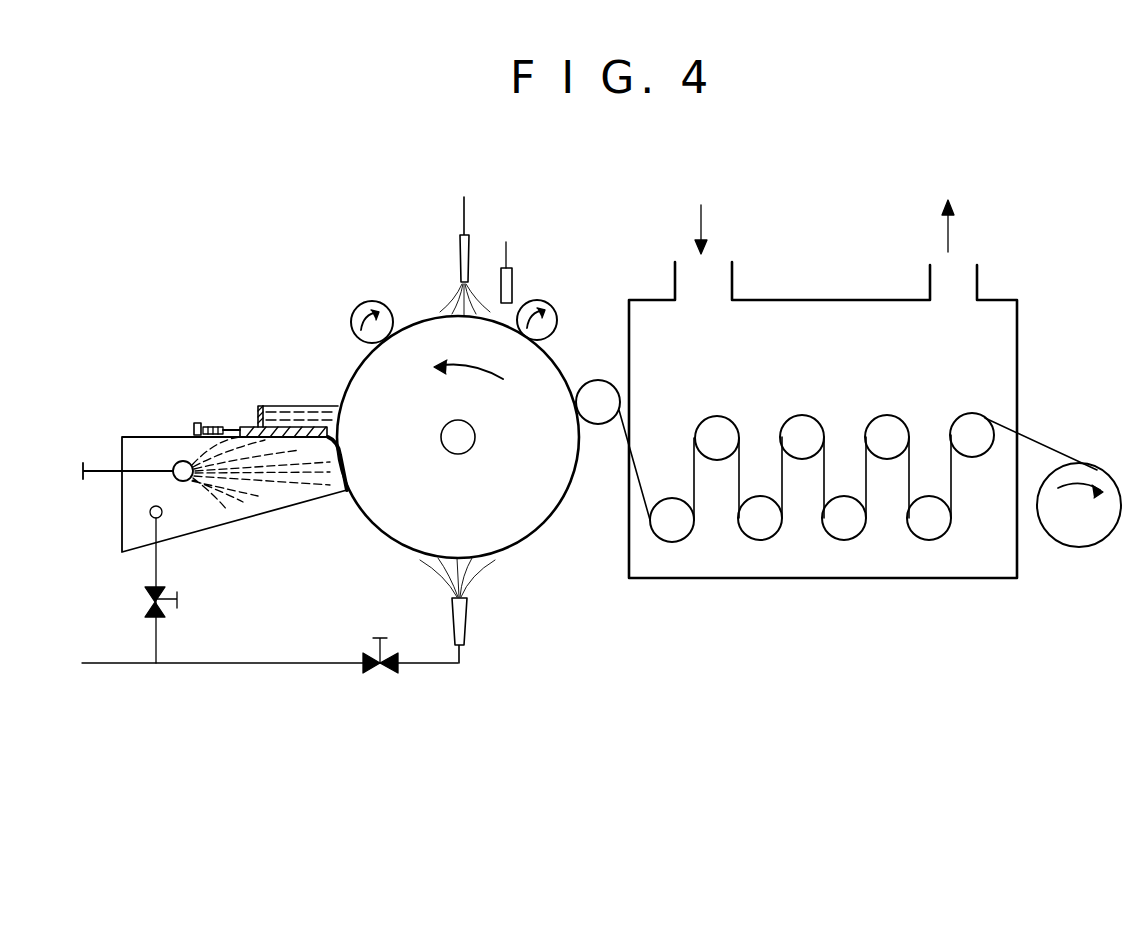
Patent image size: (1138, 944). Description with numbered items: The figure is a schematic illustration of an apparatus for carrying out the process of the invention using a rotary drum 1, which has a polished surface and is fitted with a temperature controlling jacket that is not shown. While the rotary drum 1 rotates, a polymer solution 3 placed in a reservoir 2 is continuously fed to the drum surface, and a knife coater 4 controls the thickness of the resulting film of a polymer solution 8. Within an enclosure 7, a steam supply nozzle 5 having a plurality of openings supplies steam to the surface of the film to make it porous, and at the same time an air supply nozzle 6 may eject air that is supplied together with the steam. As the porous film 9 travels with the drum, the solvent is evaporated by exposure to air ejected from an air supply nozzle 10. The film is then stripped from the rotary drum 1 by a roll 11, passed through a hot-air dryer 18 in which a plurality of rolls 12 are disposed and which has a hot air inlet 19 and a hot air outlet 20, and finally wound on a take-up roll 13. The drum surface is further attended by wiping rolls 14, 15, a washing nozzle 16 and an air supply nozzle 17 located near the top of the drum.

The rotary drum 1 is at (552, 385).
The reservoir 2 is at (258, 412).
The polymer solution 3 is at (310, 410).
The knife coater 4 is at (245, 425).
The steam supply nozzle 5 is at (182, 460).
The air supply nozzle 6 is at (162, 516).
The enclosure 7 is at (283, 500).
The film of a polymer solution 8 is at (343, 460).
The film 9 is at (646, 478).
The air supply nozzle 10 is at (467, 625).
The roll 11 is at (603, 410).
The rolls 12 is at (715, 430).
The take-up roll 13 is at (1088, 540).
The wiping roll 14 is at (548, 308).
The wiping roll 15 is at (372, 300).
The washing nozzle 16 is at (512, 296).
The air supply nozzle 17 is at (467, 250).
The hot-air dryer 18 is at (1018, 345).
The hot air inlet 19 is at (706, 262).
The hot air outlet 20 is at (952, 278).